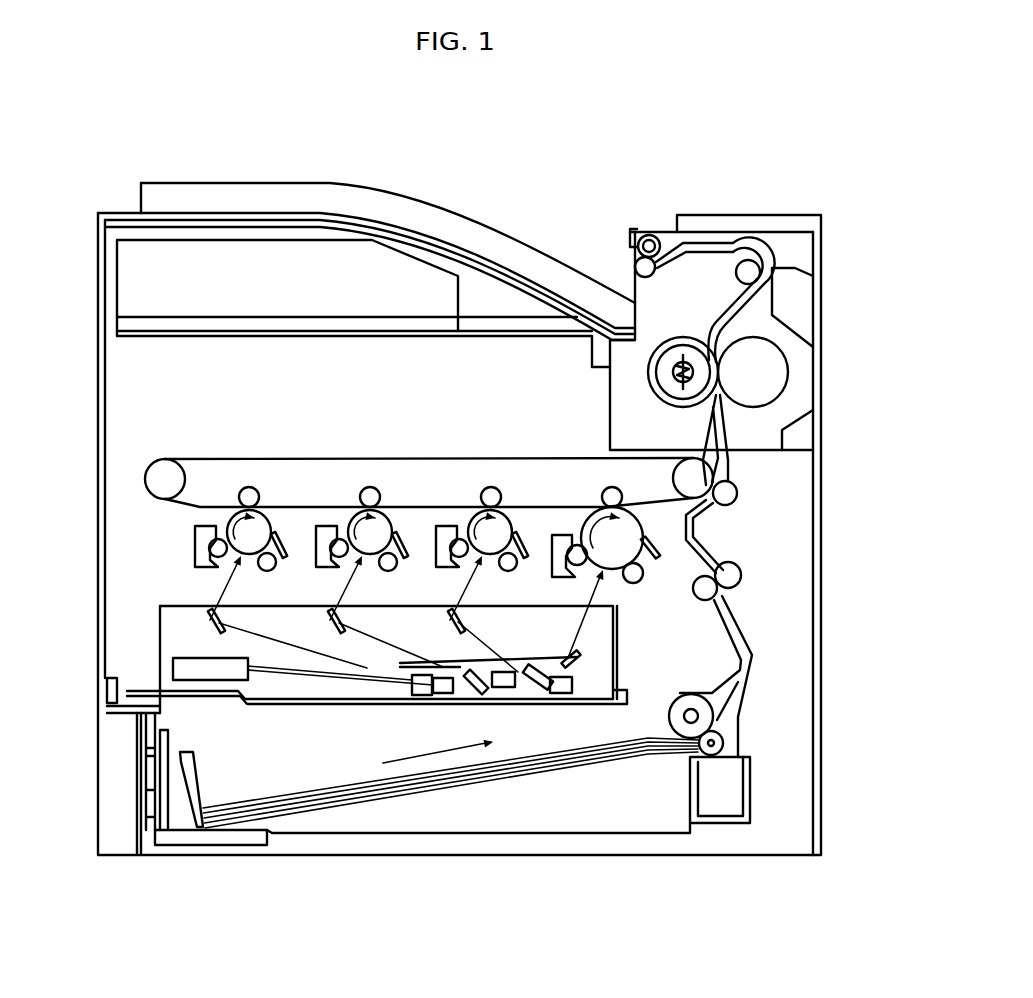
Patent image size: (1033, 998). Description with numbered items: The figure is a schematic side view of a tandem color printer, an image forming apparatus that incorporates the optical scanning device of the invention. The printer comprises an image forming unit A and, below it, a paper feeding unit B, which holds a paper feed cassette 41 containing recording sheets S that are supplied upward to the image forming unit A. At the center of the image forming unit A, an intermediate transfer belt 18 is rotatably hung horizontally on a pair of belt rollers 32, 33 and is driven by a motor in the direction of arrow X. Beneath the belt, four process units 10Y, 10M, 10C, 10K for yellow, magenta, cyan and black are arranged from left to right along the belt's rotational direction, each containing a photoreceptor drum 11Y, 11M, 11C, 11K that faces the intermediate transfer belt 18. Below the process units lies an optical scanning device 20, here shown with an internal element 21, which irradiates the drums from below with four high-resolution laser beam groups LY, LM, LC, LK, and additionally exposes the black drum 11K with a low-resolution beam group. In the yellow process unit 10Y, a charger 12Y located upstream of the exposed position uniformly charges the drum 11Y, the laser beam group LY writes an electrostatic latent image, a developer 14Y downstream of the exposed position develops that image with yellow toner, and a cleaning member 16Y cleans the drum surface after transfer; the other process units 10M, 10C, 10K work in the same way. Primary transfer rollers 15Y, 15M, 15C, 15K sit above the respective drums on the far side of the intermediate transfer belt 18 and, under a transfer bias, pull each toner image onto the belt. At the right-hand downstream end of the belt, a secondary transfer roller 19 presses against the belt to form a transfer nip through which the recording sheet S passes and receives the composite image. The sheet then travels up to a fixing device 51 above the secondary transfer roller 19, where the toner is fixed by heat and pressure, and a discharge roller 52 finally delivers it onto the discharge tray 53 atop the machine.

The discharge tray 53 is at (512, 228).
The discharge roller 52 is at (648, 236).
The fixing device 51 is at (792, 309).
The process unit 10Y is at (230, 518).
The process unit 10M is at (348, 499).
The process unit 10C is at (478, 499).
The process unit 10K is at (601, 498).
The photoreceptor drum 11Y is at (264, 518).
The photoreceptor drum 11M is at (385, 518).
The photoreceptor drum 11C is at (504, 520).
The photoreceptor drum 11K is at (616, 566).
The primary transfer roller 15Y is at (244, 488).
The primary transfer roller 15M is at (365, 488).
The primary transfer roller 15C is at (496, 488).
The primary transfer roller 15K is at (590, 496).
The developer 14Y is at (195, 544).
The charger 12Y is at (268, 572).
The cleaning member 16Y is at (287, 545).
The intermediate transfer belt 18 is at (200, 509).
The belt roller 33 is at (153, 479).
The belt roller 32 is at (682, 479).
The secondary transfer roller 19 is at (737, 494).
The optical scanning device 20 is at (379, 634).
The laser light source 21 is at (198, 658).
The paper feed cassette 41 is at (443, 799).
The recording sheet S is at (292, 790).
The arrow X is at (452, 443).
The laser beam group LY is at (313, 648).
The laser beam group LM is at (418, 648).
The laser beam group LC is at (505, 650).
The laser beam group LK is at (613, 633).
The image forming unit A is at (55, 214).
The paper feeding unit B is at (57, 707).